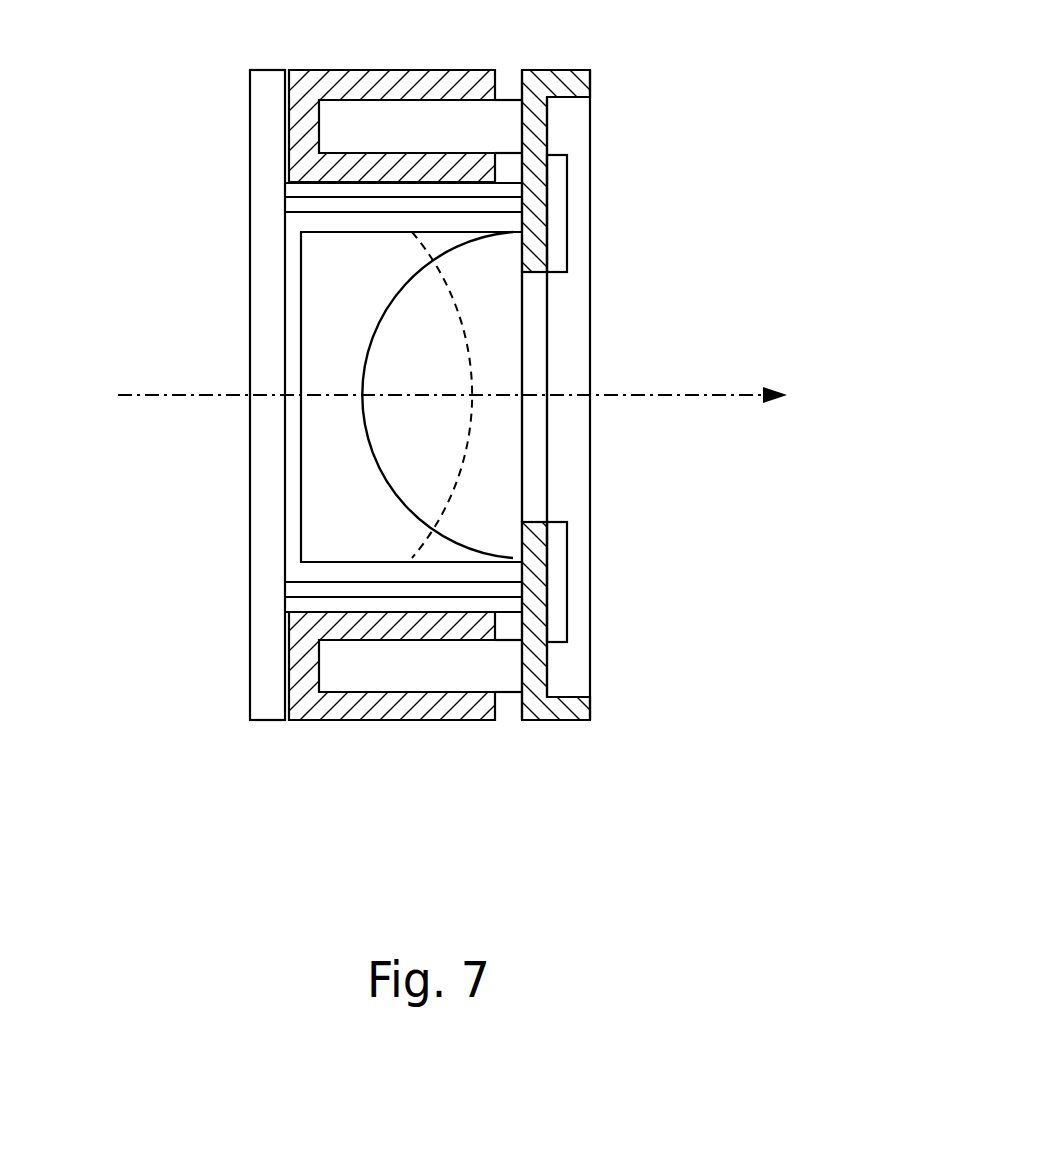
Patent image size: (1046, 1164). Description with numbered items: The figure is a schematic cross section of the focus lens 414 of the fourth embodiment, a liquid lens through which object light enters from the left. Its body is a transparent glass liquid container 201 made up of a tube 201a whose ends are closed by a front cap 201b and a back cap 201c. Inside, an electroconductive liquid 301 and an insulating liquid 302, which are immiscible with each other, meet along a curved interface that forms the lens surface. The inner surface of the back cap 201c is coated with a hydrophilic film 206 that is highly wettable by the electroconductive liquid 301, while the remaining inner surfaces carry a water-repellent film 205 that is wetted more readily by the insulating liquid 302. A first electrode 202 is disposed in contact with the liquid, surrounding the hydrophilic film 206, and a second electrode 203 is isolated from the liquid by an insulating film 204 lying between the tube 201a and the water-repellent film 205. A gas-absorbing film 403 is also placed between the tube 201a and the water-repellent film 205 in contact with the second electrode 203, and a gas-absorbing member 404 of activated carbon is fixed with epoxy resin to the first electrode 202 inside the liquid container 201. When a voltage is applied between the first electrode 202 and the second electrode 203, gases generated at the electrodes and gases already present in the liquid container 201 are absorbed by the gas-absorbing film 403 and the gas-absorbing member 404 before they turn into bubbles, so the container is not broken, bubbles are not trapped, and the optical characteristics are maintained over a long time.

The focus lens 414 is at (165, 142).
The liquid container 201 is at (417, 476).
The tube 201a is at (430, 665).
The cap 201b is at (266, 680).
The cap 201c is at (571, 443).
The first electrode 202 is at (577, 85).
The second electrode 203 is at (312, 80).
The insulating film 204 is at (507, 592).
The water-repellent film 205 is at (500, 222).
The hydrophilic film 206 is at (537, 433).
The electroconductive liquid 301 is at (493, 486).
The insulating liquid 302 is at (338, 534).
The gas-absorbing film 403 is at (503, 182).
The gas-absorbing member 404 is at (560, 195).